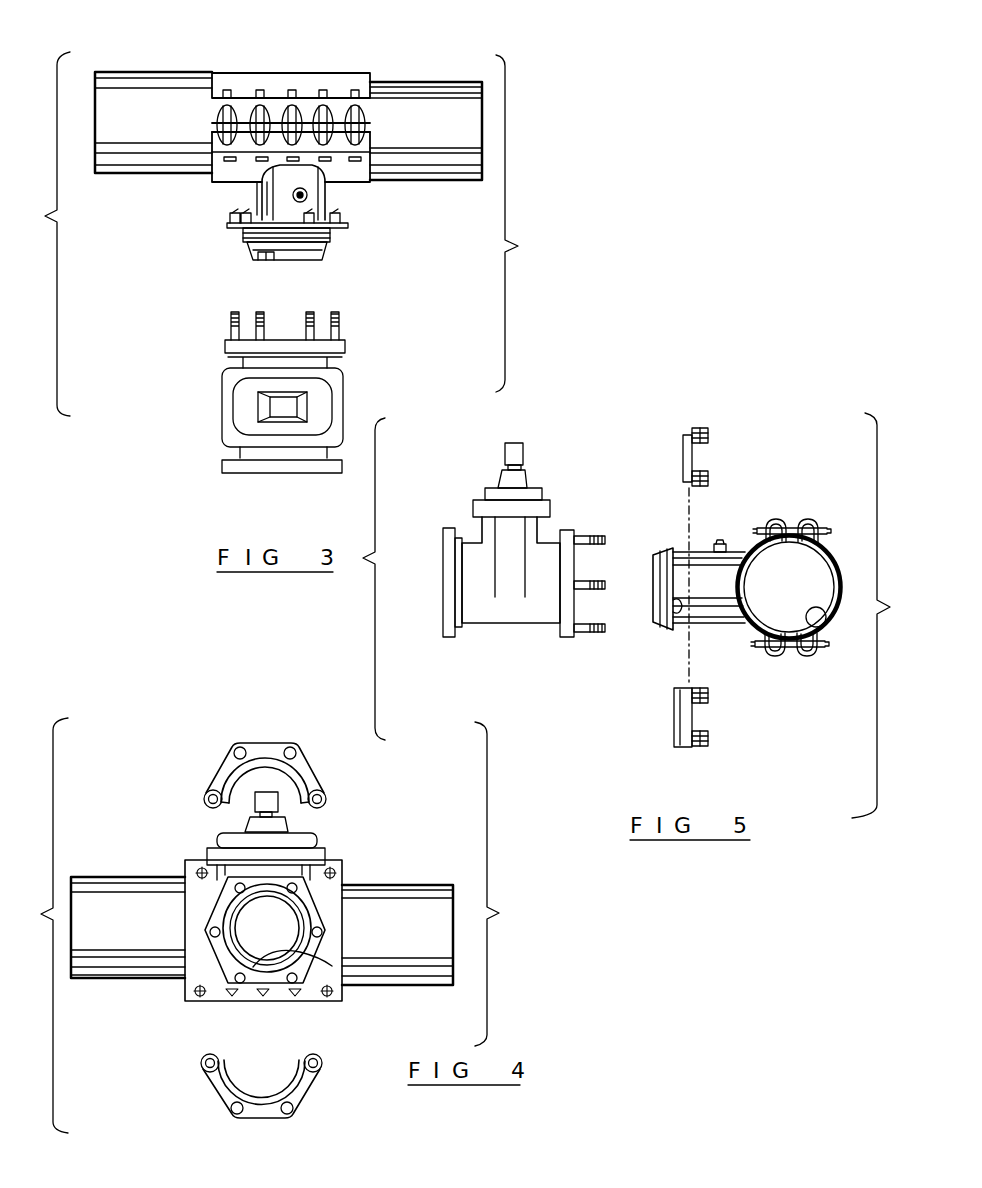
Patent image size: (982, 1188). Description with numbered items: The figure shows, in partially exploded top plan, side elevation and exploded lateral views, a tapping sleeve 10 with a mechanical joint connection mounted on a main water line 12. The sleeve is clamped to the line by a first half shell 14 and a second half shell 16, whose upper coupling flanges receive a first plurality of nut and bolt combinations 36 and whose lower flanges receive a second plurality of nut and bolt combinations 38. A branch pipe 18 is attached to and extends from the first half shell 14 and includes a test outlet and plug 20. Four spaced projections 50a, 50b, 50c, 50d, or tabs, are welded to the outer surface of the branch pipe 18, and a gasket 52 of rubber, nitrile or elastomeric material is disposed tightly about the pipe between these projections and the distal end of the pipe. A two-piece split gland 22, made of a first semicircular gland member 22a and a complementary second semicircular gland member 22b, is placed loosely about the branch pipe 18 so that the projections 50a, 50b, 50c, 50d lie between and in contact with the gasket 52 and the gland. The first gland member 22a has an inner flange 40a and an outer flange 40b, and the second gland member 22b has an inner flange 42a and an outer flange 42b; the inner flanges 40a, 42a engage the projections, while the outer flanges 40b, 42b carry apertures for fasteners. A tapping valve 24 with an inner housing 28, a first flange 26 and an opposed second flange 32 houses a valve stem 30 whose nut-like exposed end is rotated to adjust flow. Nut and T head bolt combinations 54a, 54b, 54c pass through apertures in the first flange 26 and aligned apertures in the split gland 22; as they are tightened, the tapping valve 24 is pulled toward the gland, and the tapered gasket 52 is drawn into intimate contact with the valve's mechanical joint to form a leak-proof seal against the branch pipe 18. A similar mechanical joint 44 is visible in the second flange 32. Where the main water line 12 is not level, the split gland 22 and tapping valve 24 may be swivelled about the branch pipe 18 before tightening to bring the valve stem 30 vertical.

In FIG. 3, the tapping sleeve 10 is at (125, 60).
In FIG. 4, the tapping sleeve 10 is at (165, 815).
In FIG. 3, the main water line 12 is at (415, 138).
In FIG. 5, the main water line 12 is at (833, 622).
In FIG. 4, the main water line 12 is at (386, 940).
In FIG. 3, the first half shell 14 is at (230, 168).
In FIG. 5, the first half shell 14 is at (757, 545).
In FIG. 4, the first half shell 14 is at (340, 915).
In FIG. 3, the second half shell 16 is at (335, 73).
In FIG. 5, the second half shell 16 is at (834, 553).
In FIG. 3, the branch pipe 18 is at (257, 192).
In FIG. 5, the branch pipe 18 is at (708, 625).
In FIG. 3, the test outlet and plug 20 is at (313, 196).
In FIG. 5, the test outlet and plug 20 is at (720, 540).
In FIG. 3, the two-piece split gland 22 is at (354, 221).
In FIG. 5, the first semicircular gland member 22a is at (684, 433).
In FIG. 4, the first semicircular gland member 22a is at (274, 740).
In FIG. 5, the second semicircular gland member 22b is at (672, 715).
In FIG. 4, the second semicircular gland member 22b is at (215, 1100).
In FIG. 3, the tapping valve 24 is at (192, 392).
In FIG. 5, the tapping valve 24 is at (492, 630).
In FIG. 4, the tapping valve 24 is at (207, 900).
In FIG. 3, the first flange 26 is at (228, 345).
In FIG. 5, the first flange 26 is at (570, 530).
In FIG. 3, the inner housing 28 is at (222, 432).
In FIG. 5, the inner housing 28 is at (485, 532).
In FIG. 3, the valve stem 30 is at (288, 407).
In FIG. 5, the valve stem 30 is at (506, 445).
In FIG. 4, the valve stem 30 is at (282, 807).
In FIG. 3, the second flange 32 is at (247, 475).
In FIG. 5, the second flange 32 is at (446, 590).
In FIG. 4, the second flange 32 is at (220, 953).
In FIG. 3, the first plurality of nut and bolt combinations 36 is at (284, 108).
In FIG. 5, the first plurality of nut and bolt combinations 36 is at (793, 520).
In FIG. 5, the second plurality of nut and bolt combinations 38 is at (786, 656).
In FIG. 5, the inner flange 40a is at (707, 476).
In FIG. 4, the inner flange 40a is at (243, 769).
In FIG. 5, the outer flange 40b is at (702, 432).
In FIG. 4, the outer flange 40b is at (223, 772).
In FIG. 5, the inner flange 42a is at (675, 728).
In FIG. 4, the inner flange 42a is at (238, 1090).
In FIG. 5, the outer flange 42b is at (694, 746).
In FIG. 4, the outer flange 42b is at (306, 1090).
In FIG. 4, the mechanical joint 44 is at (303, 953).
In FIG. 3, the spaced projection 50a is at (287, 253).
In FIG. 5, the spaced projection 50a is at (684, 560).
In FIG. 3, the spaced projection 50b is at (245, 233).
In FIG. 5, the spaced projection 50c is at (673, 628).
In FIG. 3, the spaced projection 50d is at (335, 237).
In FIG. 5, the spaced projection 50d is at (662, 600).
In FIG. 3, the gasket 52 is at (328, 250).
In FIG. 5, the gasket 52 is at (656, 550).
In FIG. 5, the nut and T head bolt combination 54a is at (599, 640).
In FIG. 3, the nut and T head bolt combination 54b is at (340, 322).
In FIG. 5, the nut and T head bolt combination 54b is at (602, 582).
In FIG. 3, the nut and T head bolt combination 54c is at (312, 322).
In FIG. 5, the nut and T head bolt combination 54c is at (599, 537).